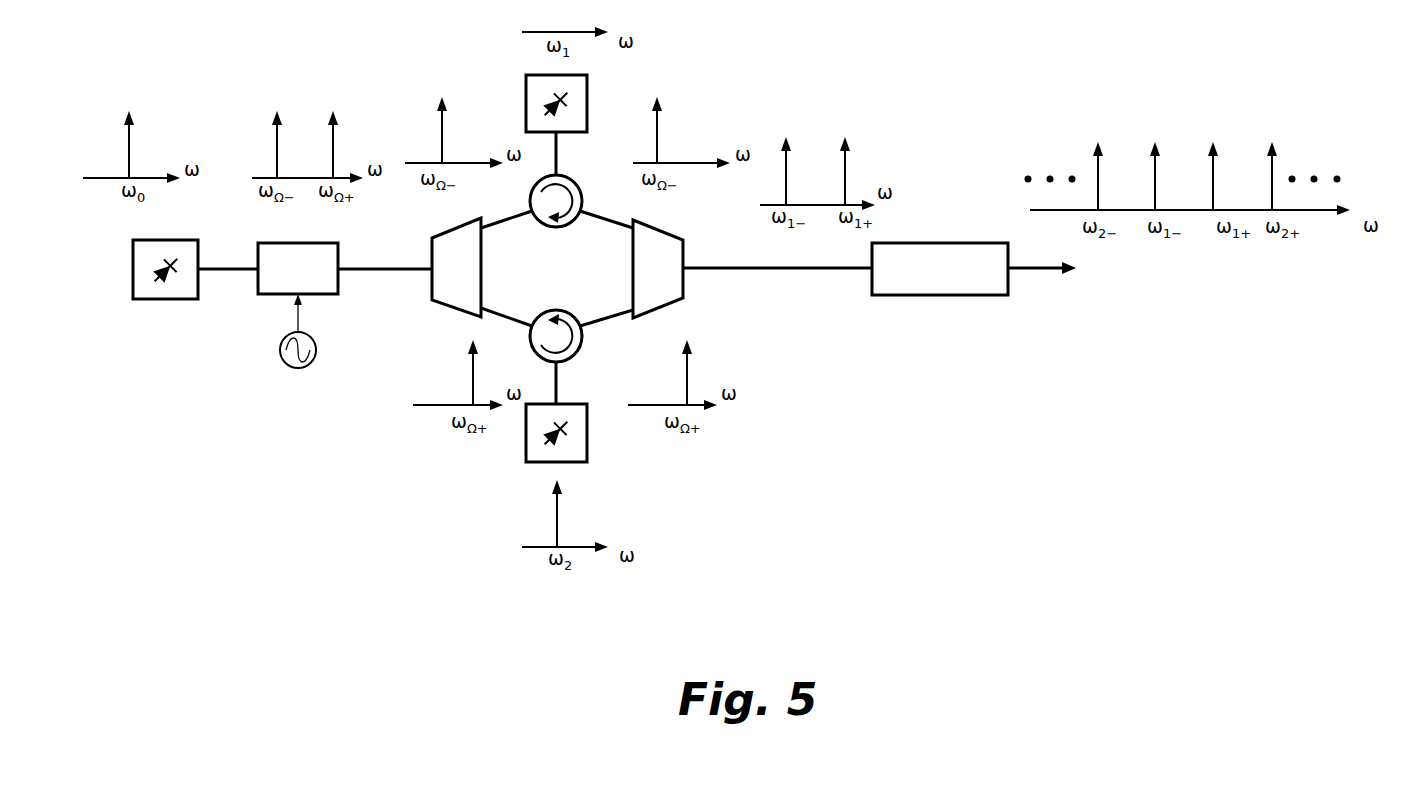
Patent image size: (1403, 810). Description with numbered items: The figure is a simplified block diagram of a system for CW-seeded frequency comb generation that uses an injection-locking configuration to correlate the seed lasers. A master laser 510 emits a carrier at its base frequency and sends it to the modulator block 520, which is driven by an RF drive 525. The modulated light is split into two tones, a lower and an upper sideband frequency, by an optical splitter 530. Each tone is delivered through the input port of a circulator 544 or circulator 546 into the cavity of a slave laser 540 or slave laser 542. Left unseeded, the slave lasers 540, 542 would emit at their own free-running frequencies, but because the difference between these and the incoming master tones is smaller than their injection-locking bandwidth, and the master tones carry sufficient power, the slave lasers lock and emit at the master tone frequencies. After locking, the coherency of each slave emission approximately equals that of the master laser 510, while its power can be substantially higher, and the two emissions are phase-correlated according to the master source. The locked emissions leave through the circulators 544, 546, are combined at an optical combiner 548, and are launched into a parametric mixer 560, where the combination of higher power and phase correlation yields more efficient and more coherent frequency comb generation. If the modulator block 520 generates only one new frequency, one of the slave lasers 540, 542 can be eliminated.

The master laser 510 is at (157, 240).
The modulator block 520 is at (307, 243).
The RF drive 525 is at (300, 368).
The optical splitter 530 is at (453, 310).
The slave laser 540 is at (528, 75).
The slave laser 542 is at (565, 462).
The circulator 544 is at (562, 175).
The circulator 546 is at (583, 340).
The optical combiner 548 is at (683, 247).
The parametric mixer 560 is at (923, 243).